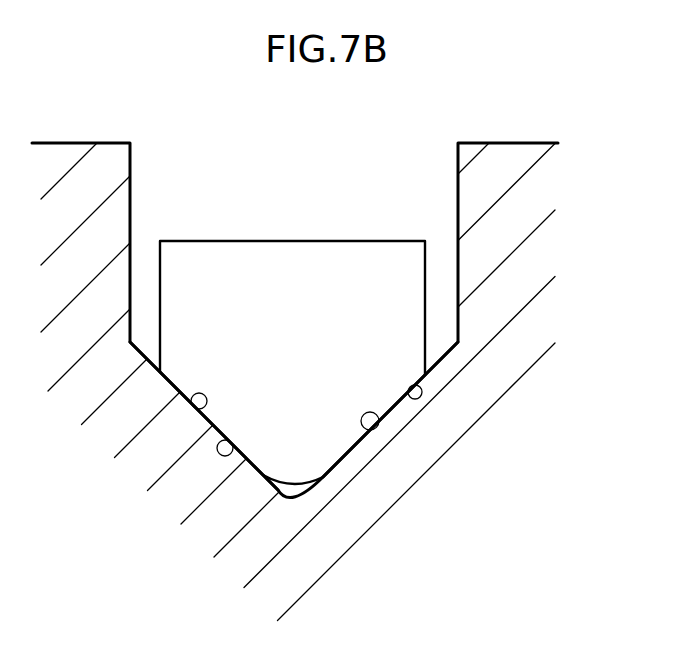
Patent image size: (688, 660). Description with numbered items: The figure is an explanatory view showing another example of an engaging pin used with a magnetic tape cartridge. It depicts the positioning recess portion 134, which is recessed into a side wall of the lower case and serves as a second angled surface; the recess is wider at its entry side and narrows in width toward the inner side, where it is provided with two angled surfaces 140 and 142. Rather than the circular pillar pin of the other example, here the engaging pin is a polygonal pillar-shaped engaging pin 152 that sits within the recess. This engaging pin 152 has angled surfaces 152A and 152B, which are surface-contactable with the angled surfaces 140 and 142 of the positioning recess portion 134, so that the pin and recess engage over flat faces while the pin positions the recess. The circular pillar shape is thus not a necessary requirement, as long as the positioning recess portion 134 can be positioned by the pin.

The positioning recess portion 134 is at (456, 203).
The angled surface 140 is at (209, 426).
The angled surface 142 is at (363, 427).
The polygonal pillar-shaped engaging pin 152 is at (302, 238).
The angled surface 152A is at (236, 450).
The angled surface 152B is at (407, 397).